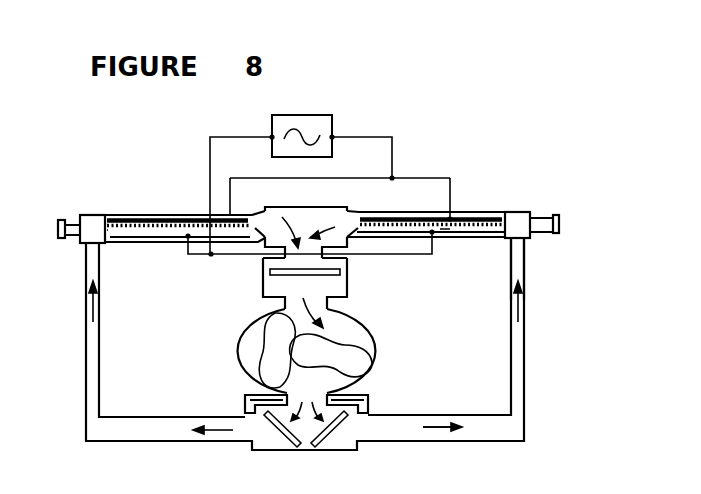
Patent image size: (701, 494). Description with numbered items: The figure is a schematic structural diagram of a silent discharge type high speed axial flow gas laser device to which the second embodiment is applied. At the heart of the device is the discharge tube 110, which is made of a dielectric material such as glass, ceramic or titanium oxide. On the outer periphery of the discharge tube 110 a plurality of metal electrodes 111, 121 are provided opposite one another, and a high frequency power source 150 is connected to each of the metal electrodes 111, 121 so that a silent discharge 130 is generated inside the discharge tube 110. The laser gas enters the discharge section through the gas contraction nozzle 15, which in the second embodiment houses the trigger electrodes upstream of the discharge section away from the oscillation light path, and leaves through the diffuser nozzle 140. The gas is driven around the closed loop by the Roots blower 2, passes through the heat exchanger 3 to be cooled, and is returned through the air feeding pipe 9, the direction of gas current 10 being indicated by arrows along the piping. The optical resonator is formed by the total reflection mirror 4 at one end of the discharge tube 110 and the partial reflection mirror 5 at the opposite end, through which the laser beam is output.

The Roots blower 2 is at (370, 331).
The heat exchanger 3 is at (340, 272).
The total reflection mirror 4 is at (58, 228).
The partial reflection mirror 5 is at (559, 222).
The air feeding pipe 9 is at (475, 441).
The direction of gas current 10 is at (435, 435).
The gas contraction nozzle 15 is at (508, 242).
The discharge tube 110 is at (494, 213).
The metal electrode 111 is at (477, 233).
The metal electrode 121 is at (473, 215).
The silent discharge 130 is at (447, 238).
The diffuser nozzle 140 is at (354, 221).
The high frequency power source 150 is at (332, 115).